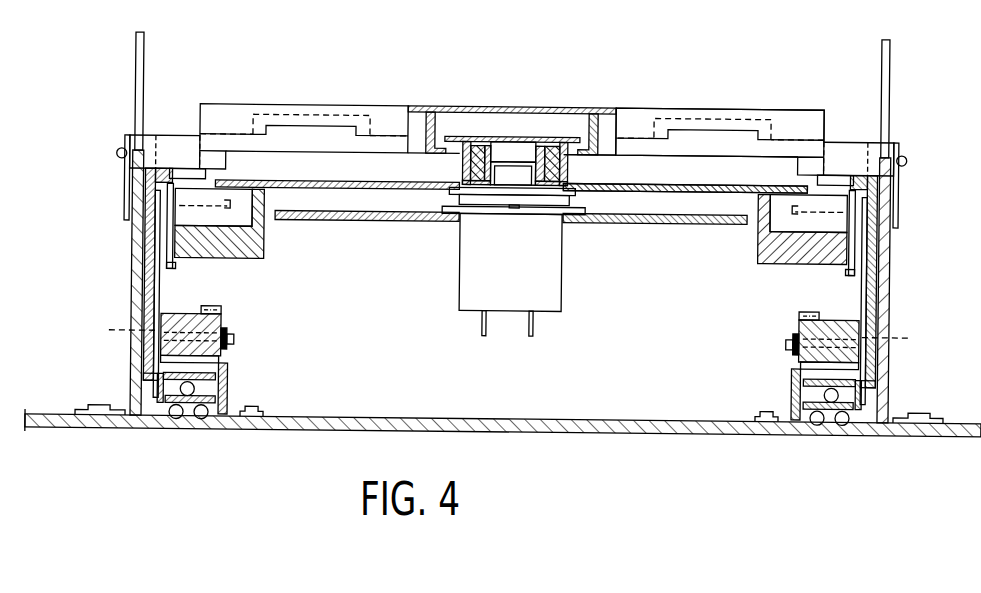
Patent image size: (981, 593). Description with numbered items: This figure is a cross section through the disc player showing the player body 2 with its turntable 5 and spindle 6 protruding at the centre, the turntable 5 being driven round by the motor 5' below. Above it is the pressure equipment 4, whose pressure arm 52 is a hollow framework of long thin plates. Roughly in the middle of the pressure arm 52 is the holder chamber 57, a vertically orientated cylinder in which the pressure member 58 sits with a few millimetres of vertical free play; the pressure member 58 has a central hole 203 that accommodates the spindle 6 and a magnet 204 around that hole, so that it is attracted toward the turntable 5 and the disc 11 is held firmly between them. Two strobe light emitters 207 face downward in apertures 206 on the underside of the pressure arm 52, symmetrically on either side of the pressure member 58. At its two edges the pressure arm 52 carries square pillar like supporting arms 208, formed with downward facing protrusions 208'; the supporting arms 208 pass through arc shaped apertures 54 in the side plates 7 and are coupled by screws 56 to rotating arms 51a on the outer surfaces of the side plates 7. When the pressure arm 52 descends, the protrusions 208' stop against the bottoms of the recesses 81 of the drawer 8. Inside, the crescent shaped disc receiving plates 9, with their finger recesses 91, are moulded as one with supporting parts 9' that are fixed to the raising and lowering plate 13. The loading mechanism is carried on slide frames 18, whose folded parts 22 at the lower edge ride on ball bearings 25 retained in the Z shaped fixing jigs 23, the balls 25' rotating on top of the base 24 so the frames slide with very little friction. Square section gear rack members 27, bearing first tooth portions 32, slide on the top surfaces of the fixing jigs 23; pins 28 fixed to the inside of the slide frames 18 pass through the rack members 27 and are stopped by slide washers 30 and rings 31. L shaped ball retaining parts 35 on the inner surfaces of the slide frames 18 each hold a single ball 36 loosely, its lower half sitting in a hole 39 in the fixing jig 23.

The player body 2 is at (640, 200).
The pressure equipment 4 is at (377, 96).
The turntable 5 is at (479, 194).
The motor 5' is at (518, 271).
The spindle 6 is at (512, 172).
The side plates 7 is at (132, 288).
The drawer 8 is at (148, 240).
The disc receiving plates 9 is at (511, 172).
The supporting parts 9' is at (511, 237).
The disc 11 is at (687, 193).
The raising and lowering plate 13 is at (173, 264).
The slide frames 18 is at (158, 293).
The folded parts 22 is at (153, 408).
The fixing jigs 23 is at (228, 375).
The base 24 is at (607, 435).
The ball bearings 25 is at (509, 442).
The balls 25' is at (496, 441).
The gear rack members 27 is at (220, 320).
The pins 28 is at (233, 340).
The slide washers 30 is at (228, 360).
The rings 31 is at (230, 345).
The first tooth portions 32 is at (218, 305).
The ball retaining parts 35 is at (150, 376).
The ball 36 is at (518, 332).
The holes 39 is at (230, 405).
The rotating arms 51a is at (118, 185).
The pressure arm 52 is at (795, 123).
The arc shaped apertures 54 is at (140, 72).
The screws 56 is at (112, 155).
The holder chamber 57 is at (447, 118).
The pressure member 58 is at (476, 127).
The recesses 81 is at (163, 163).
The recesses 91 is at (242, 213).
The hole 203 is at (505, 140).
The magnet 204 is at (567, 163).
The apertures 206 is at (318, 127).
The strobe light emitters 207 is at (730, 133).
The supporting arms 208 is at (513, 139).
The downward facing protrusions 208' is at (534, 108).